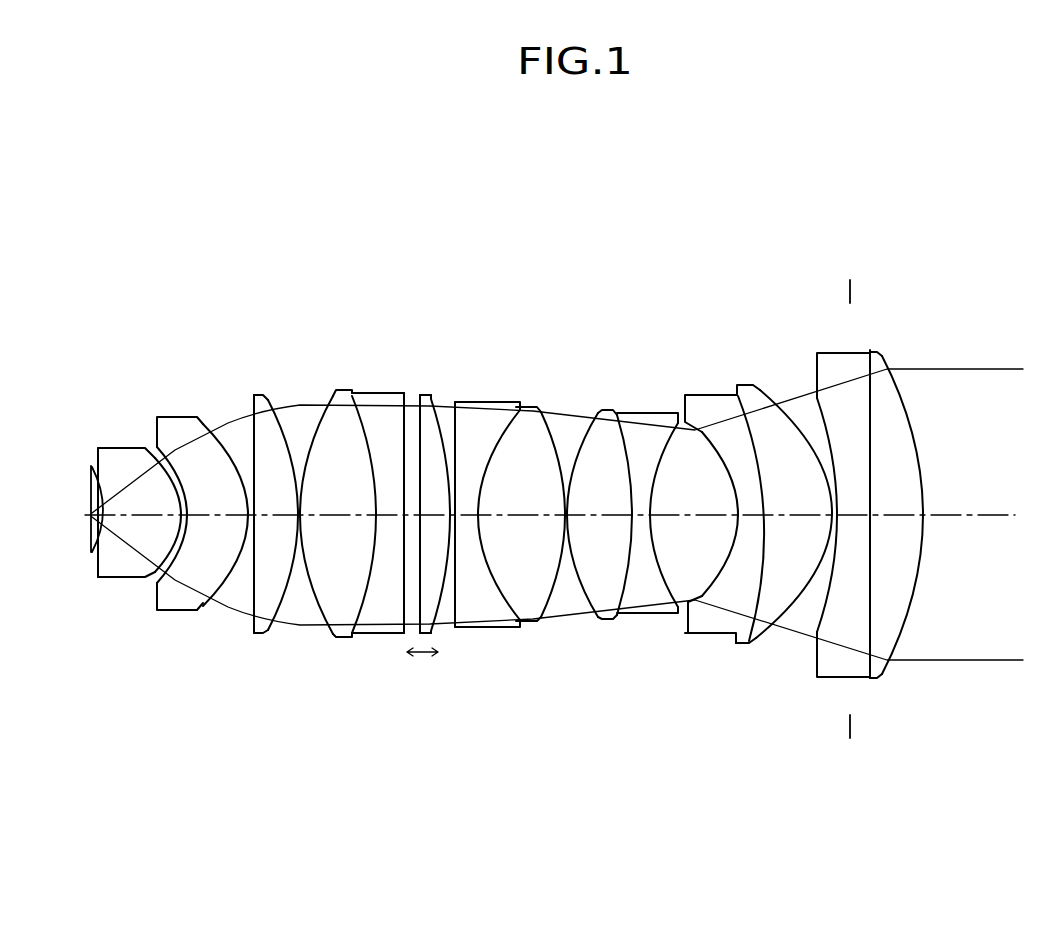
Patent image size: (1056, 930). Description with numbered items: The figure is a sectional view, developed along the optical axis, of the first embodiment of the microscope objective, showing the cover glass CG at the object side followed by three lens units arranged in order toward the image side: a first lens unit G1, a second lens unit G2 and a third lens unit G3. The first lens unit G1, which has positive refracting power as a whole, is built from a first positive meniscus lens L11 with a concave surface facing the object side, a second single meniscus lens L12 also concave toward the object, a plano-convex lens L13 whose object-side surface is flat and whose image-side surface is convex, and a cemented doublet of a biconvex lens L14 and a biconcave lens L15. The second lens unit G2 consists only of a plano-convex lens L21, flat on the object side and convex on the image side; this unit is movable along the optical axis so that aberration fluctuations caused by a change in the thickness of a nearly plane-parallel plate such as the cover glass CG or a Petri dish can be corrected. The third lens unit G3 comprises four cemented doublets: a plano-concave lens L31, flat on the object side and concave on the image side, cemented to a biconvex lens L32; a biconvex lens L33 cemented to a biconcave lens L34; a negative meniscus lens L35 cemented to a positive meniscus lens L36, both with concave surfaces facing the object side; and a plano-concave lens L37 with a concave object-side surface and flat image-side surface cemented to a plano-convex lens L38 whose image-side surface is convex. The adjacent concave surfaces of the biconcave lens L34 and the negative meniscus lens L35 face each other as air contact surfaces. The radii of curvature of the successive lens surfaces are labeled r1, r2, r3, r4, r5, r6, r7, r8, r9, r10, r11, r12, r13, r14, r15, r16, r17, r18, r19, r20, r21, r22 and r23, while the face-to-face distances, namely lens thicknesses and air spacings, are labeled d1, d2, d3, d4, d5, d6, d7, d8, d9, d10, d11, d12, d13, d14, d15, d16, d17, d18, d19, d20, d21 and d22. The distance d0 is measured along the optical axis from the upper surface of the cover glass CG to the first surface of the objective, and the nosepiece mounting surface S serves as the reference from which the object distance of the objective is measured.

The cover glass CG is at (91, 467).
The first lens unit G1 is at (105, 190).
The second lens unit G2 is at (463, 190).
The third lens unit G3 is at (467, 190).
The nosepiece mounting surface S is at (849, 303).
The first positive meniscus lens L11 is at (139, 384).
The second single meniscus lens L12 is at (202, 401).
The plano-convex lens L13 is at (264, 412).
The biconvex lens L14 is at (334, 414).
The biconcave lens L15 is at (378, 412).
The plano-convex lens L21 is at (435, 412).
The plano-concave lens L31 is at (493, 409).
The biconvex lens L32 is at (548, 406).
The biconvex lens L33 is at (607, 405).
The biconcave lens L34 is at (658, 402).
The negative meniscus lens L35 is at (724, 417).
The positive meniscus lens L36 is at (784, 417).
The plano-concave lens L37 is at (844, 435).
The plano-convex lens L38 is at (903, 435).
The radius of curvature r1 is at (118, 448).
The radius of curvature r2 is at (149, 451).
The radius of curvature r3 is at (195, 417).
The radius of curvature r4 is at (231, 452).
The radius of curvature r5 is at (254, 395).
The radius of curvature r6 is at (270, 405).
The radius of curvature r7 is at (333, 396).
The radius of curvature r8 is at (347, 390).
The radius of curvature r9 is at (385, 393).
The radius of curvature r10 is at (420, 395).
The radius of curvature r11 is at (434, 397).
The radius of curvature r12 is at (480, 402).
The radius of curvature r13 is at (505, 402).
The radius of curvature r14 is at (548, 420).
The radius of curvature r15 is at (600, 410).
The radius of curvature r16 is at (633, 413).
The radius of curvature r17 is at (670, 413).
The radius of curvature r18 is at (700, 395).
The radius of curvature r19 is at (737, 392).
The radius of curvature r20 is at (775, 400).
The radius of curvature r21 is at (817, 398).
The radius of curvature r22 is at (870, 352).
The radius of curvature r23 is at (898, 387).
The distance from cover glass to first surface d0 is at (93, 553).
The face-to-face distance d1 is at (125, 519).
The face-to-face distance d2 is at (178, 519).
The face-to-face distance d3 is at (218, 519).
The face-to-face distance d4 is at (247, 519).
The face-to-face distance d5 is at (275, 519).
The face-to-face distance d6 is at (298, 519).
The face-to-face distance d7 is at (337, 519).
The face-to-face distance d8 is at (375, 519).
The face-to-face distance d9 is at (408, 519).
The face-to-face distance d10 is at (436, 519).
The face-to-face distance d11 is at (468, 519).
The face-to-face distance d12 is at (480, 519).
The face-to-face distance d13 is at (518, 519).
The face-to-face distance d14 is at (568, 519).
The face-to-face distance d15 is at (603, 519).
The face-to-face distance d16 is at (643, 519).
The face-to-face distance d17 is at (687, 519).
The face-to-face distance d18 is at (734, 519).
The face-to-face distance d19 is at (748, 519).
The face-to-face distance d20 is at (790, 519).
The face-to-face distance d21 is at (835, 519).
The face-to-face distance d22 is at (849, 738).